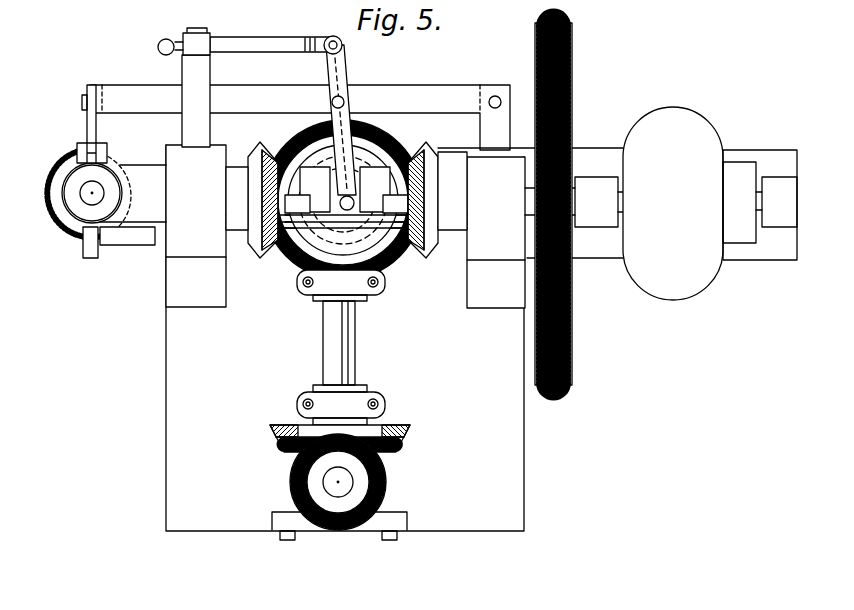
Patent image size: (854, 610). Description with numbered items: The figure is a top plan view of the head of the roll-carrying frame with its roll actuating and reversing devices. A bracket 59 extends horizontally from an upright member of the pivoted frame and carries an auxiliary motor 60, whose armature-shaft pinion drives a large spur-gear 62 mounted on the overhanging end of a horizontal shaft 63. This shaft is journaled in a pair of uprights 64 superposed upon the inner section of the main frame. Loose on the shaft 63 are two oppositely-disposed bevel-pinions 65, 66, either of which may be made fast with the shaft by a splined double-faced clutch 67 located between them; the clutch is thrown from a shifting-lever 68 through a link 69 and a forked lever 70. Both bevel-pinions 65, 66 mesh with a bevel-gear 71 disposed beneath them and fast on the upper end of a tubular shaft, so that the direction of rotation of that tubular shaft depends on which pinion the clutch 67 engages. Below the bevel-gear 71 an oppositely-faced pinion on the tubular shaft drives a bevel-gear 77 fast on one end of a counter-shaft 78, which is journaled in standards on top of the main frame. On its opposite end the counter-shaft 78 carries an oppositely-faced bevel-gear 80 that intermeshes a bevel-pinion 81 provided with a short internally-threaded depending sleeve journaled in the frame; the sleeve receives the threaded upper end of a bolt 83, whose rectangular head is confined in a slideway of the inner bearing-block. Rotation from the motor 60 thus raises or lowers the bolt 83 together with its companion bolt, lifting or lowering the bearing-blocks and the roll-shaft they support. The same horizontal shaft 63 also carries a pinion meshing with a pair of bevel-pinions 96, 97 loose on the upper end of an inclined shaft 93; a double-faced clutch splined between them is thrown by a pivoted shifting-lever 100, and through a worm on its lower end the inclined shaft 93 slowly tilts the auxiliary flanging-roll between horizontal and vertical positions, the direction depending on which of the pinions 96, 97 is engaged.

The bracket 59 is at (600, 252).
The auxiliary motor 60 is at (673, 203).
The spur-gear 62 is at (573, 378).
The horizontal shaft 63 is at (278, 250).
The uprights 64 is at (345, 226).
The bevel-pinion 65 is at (440, 152).
The bevel-pinion 66 is at (270, 147).
The double-faced clutch 67 is at (380, 168).
The shifting-lever 68 is at (158, 45).
The link 69 is at (256, 40).
The forked lever 70 is at (345, 82).
The bevel-gear 71 is at (300, 150).
The bevel-gear 77 is at (398, 262).
The counter-shaft 78 is at (357, 352).
The bevel-gear 80 is at (406, 432).
The bevel-pinion 81 is at (386, 486).
The bolt 83 is at (323, 482).
The inclined shaft 93 is at (84, 195).
The bevel-pinion 96 is at (50, 196).
The bevel-pinion 97 is at (72, 247).
The shifting-lever 100 is at (86, 130).